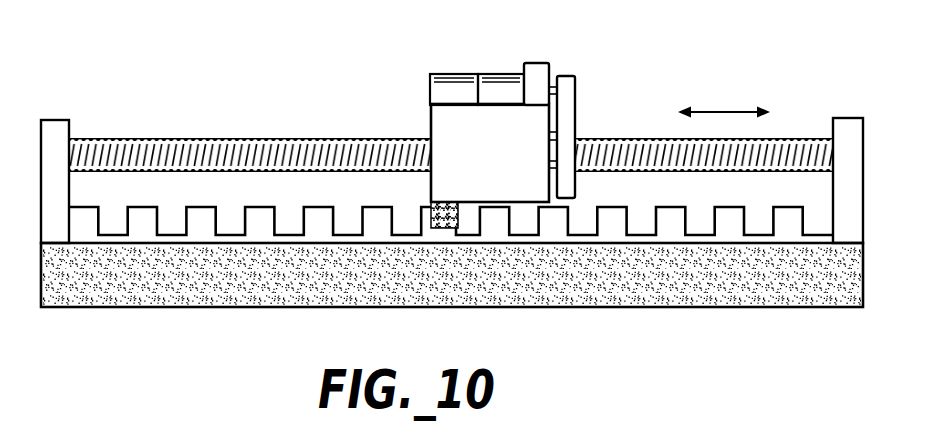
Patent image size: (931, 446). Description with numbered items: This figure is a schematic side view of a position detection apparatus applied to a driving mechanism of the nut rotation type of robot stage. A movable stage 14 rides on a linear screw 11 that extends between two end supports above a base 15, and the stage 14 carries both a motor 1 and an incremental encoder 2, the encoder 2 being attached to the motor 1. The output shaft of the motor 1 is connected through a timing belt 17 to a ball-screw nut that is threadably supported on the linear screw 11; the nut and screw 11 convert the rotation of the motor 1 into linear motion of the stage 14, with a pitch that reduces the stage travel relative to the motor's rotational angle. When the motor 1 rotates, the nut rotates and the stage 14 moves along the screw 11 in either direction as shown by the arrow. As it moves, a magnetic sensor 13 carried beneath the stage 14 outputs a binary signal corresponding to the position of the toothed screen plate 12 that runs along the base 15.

The motor 1 is at (502, 73).
The incremental encoder 2 is at (450, 74).
The linear screw 11 is at (152, 140).
The screen plate 12 is at (320, 212).
The magnetic sensor 13 is at (458, 217).
The movable stage 14 is at (447, 127).
The base 15 is at (615, 297).
The timing belt 17 is at (567, 76).